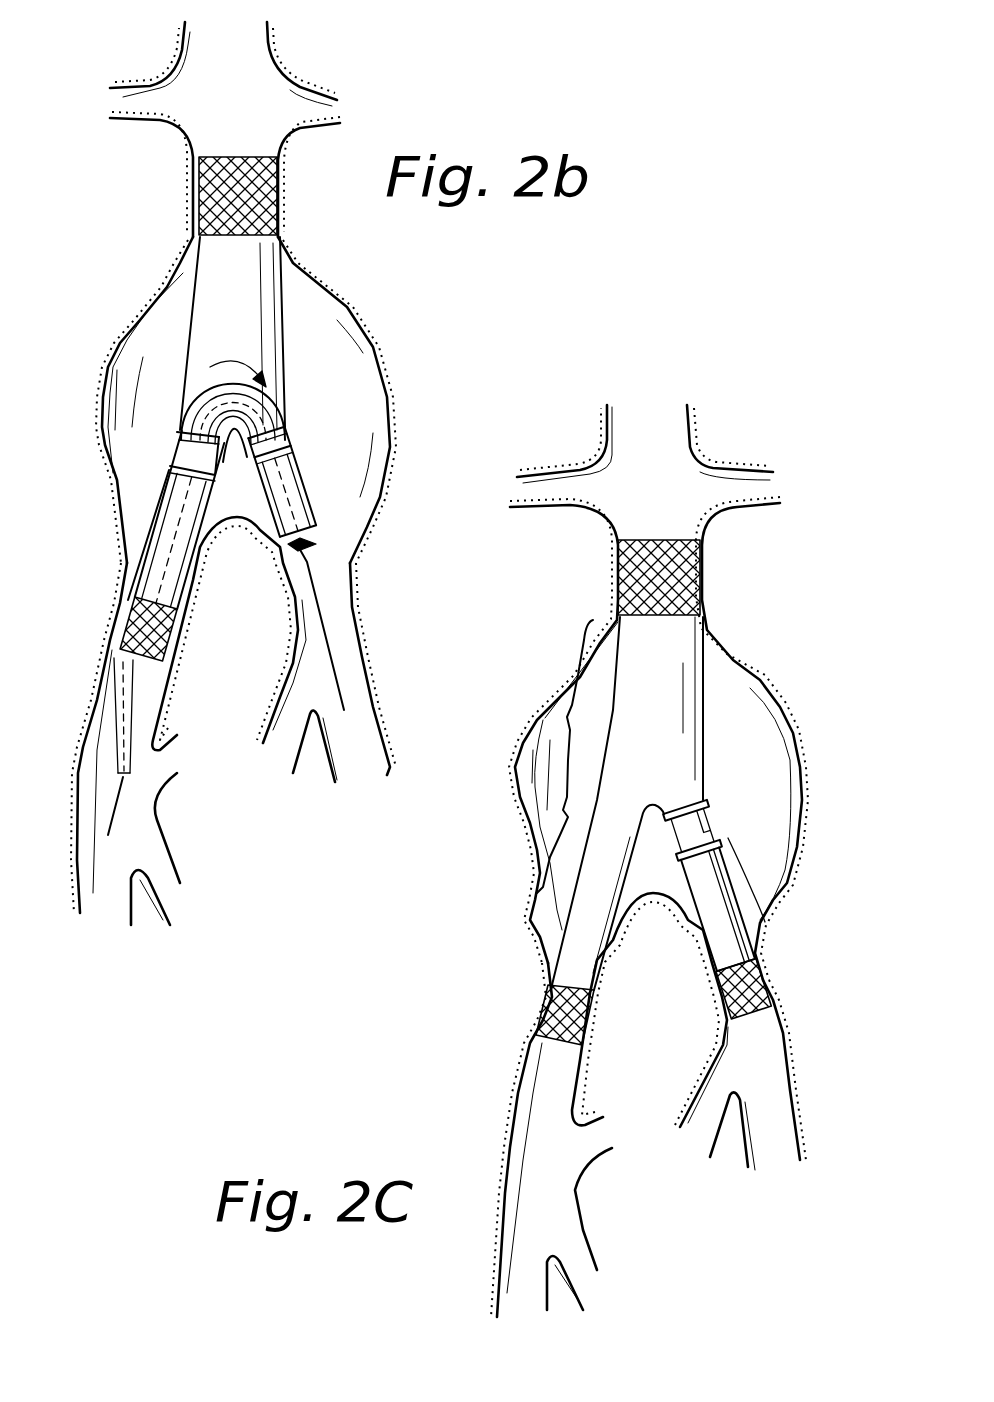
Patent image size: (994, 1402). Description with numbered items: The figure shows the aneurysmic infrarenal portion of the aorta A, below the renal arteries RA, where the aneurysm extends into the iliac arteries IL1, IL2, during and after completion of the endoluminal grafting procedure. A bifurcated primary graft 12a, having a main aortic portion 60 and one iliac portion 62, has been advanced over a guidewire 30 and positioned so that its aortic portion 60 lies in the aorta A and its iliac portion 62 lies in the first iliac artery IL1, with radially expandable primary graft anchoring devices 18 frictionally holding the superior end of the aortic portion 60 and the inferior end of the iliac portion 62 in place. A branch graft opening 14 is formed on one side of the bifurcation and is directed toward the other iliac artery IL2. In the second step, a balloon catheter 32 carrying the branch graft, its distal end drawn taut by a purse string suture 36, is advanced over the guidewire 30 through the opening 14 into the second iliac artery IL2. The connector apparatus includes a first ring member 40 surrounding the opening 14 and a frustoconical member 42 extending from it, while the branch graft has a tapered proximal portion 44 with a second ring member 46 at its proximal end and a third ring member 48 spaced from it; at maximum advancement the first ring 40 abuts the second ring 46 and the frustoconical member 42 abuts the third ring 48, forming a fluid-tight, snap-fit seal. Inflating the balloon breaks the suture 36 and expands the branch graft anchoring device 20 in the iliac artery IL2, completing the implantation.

In FIG. 2C, the bifurcated primary graft 12a is at (660, 693).
In FIG. 2C, the branch graft opening 14 is at (790, 889).
In FIG. 2C, the primary graft anchoring device 18 is at (673, 572).
In FIG. 2C, the branch graft anchoring device 20 is at (763, 988).
In FIG. 2B, the guidewire 30 is at (330, 622).
In FIG. 2B, the balloon catheter 32 is at (127, 733).
In FIG. 2B, the purse string suture 36 is at (320, 538).
In FIG. 2C, the first ring member 40 is at (703, 840).
In FIG. 2C, the frustoconical member 42 is at (712, 837).
In FIG. 2B, the tapered proximal portion 44 is at (175, 447).
In FIG. 2B, the second ring member 46 is at (172, 467).
In FIG. 2C, the second ring member 46 is at (705, 820).
In FIG. 2B, the third ring member 48 is at (177, 433).
In FIG. 2C, the third ring member 48 is at (713, 843).
In FIG. 2C, the main aortic portion 60 is at (533, 717).
In FIG. 2C, the iliac portion 62 is at (552, 731).
In FIG. 2B, the renal arteries RA is at (127, 97).
In FIG. 2C, the renal arteries RA is at (540, 465).
In FIG. 2B, the aorta A is at (240, 50).
In FIG. 2B, the first iliac artery IL1 is at (97, 760).
In FIG. 2C, the first iliac artery IL1 is at (543, 1065).
In FIG. 2B, the second iliac artery IL2 is at (372, 688).
In FIG. 2C, the second iliac artery IL2 is at (773, 1033).